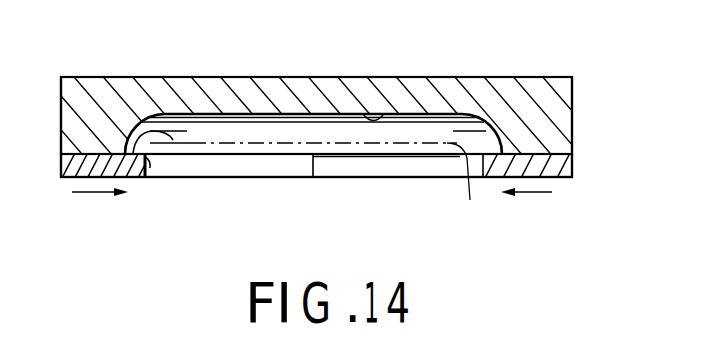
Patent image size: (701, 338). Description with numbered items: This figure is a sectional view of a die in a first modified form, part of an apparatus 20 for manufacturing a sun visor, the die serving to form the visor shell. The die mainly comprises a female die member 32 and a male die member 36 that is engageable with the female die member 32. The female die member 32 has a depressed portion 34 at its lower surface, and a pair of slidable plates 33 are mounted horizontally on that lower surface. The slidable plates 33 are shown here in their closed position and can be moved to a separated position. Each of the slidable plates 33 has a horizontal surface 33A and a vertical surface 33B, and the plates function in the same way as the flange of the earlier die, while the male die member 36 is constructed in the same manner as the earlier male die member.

The apparatus 20 is at (536, 236).
The female die member 32 is at (222, 88).
The slidable plates 33 is at (70, 178).
The horizontal surface 33A is at (173, 140).
The vertical surface 33B is at (150, 165).
The depressed portion 34 is at (387, 112).
The male die member 36 is at (410, 148).